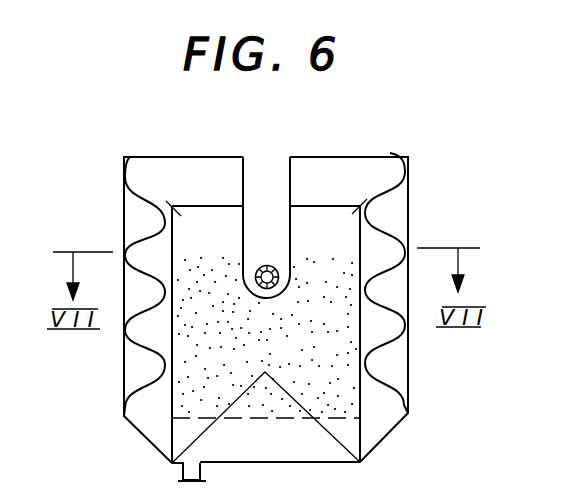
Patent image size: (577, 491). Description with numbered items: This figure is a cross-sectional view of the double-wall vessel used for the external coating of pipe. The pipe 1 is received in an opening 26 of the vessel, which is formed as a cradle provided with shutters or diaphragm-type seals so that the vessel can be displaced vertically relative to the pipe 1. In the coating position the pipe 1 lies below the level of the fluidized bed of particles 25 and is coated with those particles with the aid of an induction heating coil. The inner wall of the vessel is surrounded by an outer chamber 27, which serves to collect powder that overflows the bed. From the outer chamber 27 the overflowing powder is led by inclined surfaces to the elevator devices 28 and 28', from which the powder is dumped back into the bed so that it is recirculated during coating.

The pipe 1 is at (264, 265).
The granular bed material 25 is at (342, 378).
The opening 26 is at (289, 221).
The outer chamber 27 is at (403, 314).
The elevator device 28 is at (170, 290).
The elevator device 28' is at (322, 282).